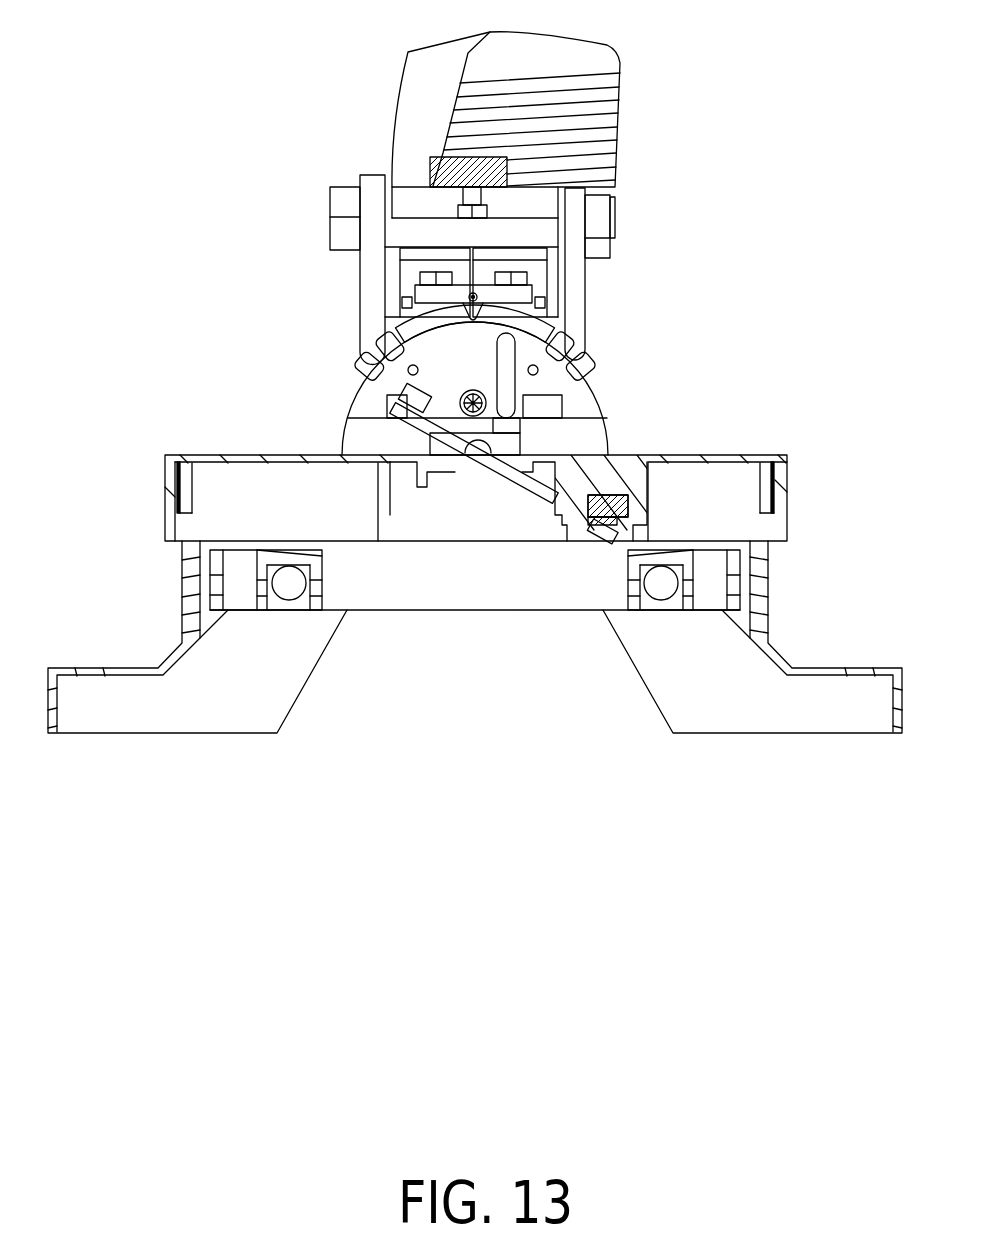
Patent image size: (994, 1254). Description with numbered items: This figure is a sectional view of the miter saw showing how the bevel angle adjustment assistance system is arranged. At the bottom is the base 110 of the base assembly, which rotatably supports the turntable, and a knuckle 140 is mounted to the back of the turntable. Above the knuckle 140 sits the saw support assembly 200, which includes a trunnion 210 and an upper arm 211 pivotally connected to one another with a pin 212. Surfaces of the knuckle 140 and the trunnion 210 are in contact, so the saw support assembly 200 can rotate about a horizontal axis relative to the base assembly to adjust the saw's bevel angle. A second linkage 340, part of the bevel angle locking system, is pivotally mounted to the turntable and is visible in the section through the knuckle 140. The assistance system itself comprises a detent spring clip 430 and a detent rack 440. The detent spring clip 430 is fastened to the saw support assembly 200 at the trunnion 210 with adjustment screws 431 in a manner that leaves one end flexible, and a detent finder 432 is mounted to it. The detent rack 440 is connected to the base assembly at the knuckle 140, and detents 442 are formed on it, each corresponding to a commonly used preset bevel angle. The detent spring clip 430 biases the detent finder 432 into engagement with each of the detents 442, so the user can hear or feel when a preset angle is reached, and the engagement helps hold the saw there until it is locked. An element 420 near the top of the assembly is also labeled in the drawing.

The base 110 is at (828, 666).
The knuckle 140 is at (790, 483).
The saw support assembly 200 is at (252, 224).
The trunnion 210 is at (358, 318).
The upper arm 211 is at (392, 116).
The pin 212 is at (622, 218).
The second linkage 340 is at (527, 489).
The adjustment bolt 420 is at (483, 196).
The detent spring clip 430 is at (417, 289).
The adjustment screws 431 is at (528, 276).
The detent finder 432 is at (473, 323).
The detent rack 440 is at (356, 365).
The detents 442 is at (586, 355).